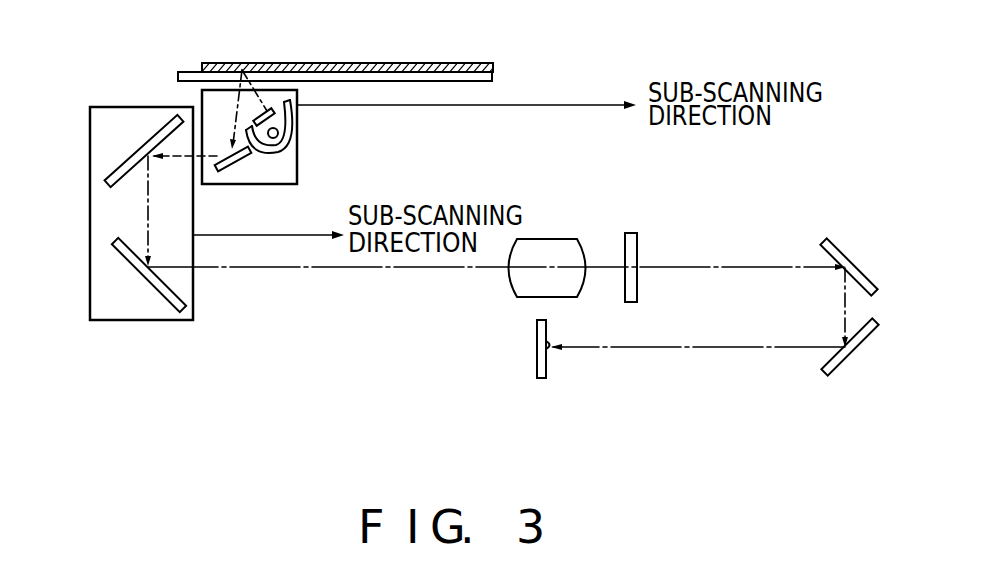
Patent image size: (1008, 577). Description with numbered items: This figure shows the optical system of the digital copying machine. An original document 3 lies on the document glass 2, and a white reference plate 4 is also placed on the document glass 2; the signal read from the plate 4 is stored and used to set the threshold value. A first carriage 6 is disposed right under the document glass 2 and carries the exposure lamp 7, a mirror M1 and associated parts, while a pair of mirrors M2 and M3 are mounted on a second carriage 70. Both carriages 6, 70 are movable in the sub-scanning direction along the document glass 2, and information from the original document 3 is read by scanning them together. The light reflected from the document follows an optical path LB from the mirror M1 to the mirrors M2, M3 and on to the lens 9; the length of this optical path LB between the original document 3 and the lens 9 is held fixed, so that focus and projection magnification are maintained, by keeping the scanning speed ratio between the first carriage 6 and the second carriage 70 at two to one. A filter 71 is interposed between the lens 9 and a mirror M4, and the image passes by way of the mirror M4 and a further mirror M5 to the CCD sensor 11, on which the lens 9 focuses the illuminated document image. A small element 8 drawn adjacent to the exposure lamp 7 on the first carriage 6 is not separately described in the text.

The document glass 2 is at (431, 82).
The original document 3 is at (430, 63).
The white reference plate 4 is at (223, 63).
The first carriage 6 is at (272, 184).
The exposure lamp 7 is at (297, 146).
The light source lamp 8 is at (297, 108).
The lens 9 is at (543, 238).
The CCD sensor 11 is at (537, 366).
The second carriage 70 is at (90, 287).
The filter 71 is at (638, 250).
The mirror M1 is at (229, 169).
The mirror M2 is at (120, 171).
The mirror M3 is at (152, 292).
The mirror M4 is at (853, 262).
The fifth mirror M5 is at (857, 361).
The optical path LB is at (334, 269).